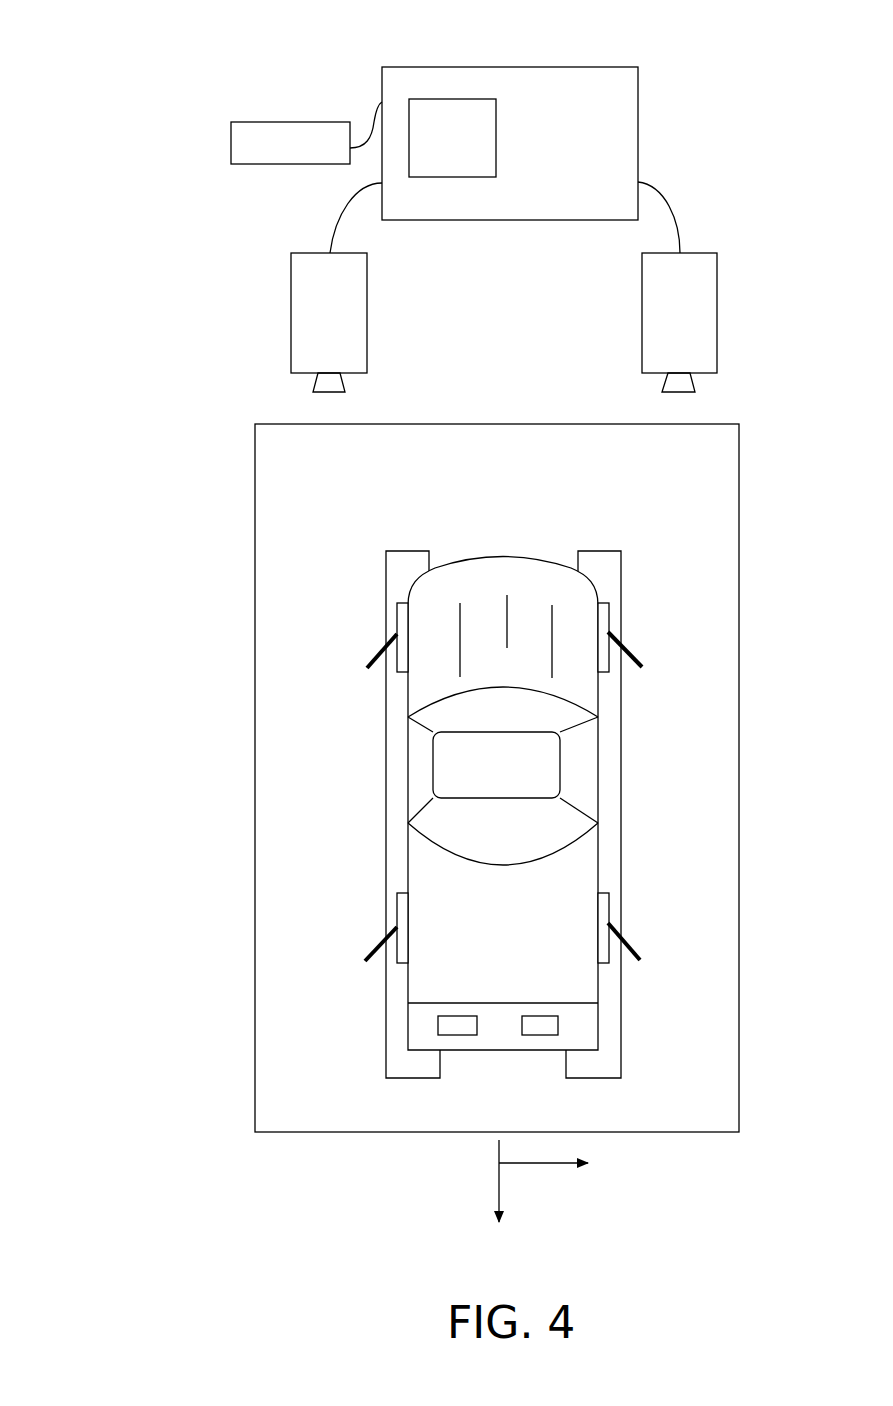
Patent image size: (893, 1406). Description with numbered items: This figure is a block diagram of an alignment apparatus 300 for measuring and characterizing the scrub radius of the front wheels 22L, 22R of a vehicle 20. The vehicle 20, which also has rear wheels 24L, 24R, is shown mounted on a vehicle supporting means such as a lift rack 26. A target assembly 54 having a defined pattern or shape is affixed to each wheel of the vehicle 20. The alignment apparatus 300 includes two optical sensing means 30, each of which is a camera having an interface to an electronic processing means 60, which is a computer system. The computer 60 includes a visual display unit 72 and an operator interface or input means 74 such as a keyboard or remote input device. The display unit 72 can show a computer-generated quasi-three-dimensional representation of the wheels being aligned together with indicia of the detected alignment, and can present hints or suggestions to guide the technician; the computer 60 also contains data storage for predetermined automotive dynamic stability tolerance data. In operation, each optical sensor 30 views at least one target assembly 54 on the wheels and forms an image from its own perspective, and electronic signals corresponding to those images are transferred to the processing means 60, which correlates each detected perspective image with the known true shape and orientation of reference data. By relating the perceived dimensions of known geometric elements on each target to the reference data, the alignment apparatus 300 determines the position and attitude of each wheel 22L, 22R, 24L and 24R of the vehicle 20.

The alignment apparatus 300 is at (138, 102).
The operator interface or input means 74 is at (296, 128).
The visual display unit 72 is at (449, 67).
The electronic processing means 60 is at (490, 98).
The optical sensing means 30 is at (367, 318).
The lift rack 26 is at (598, 1078).
The vehicle 20 is at (408, 770).
The left front wheel 22L is at (397, 660).
The right front wheel 22R is at (609, 660).
The left rear wheel 24L is at (395, 952).
The right rear wheel 24R is at (609, 948).
The target assembly 54 is at (385, 647).